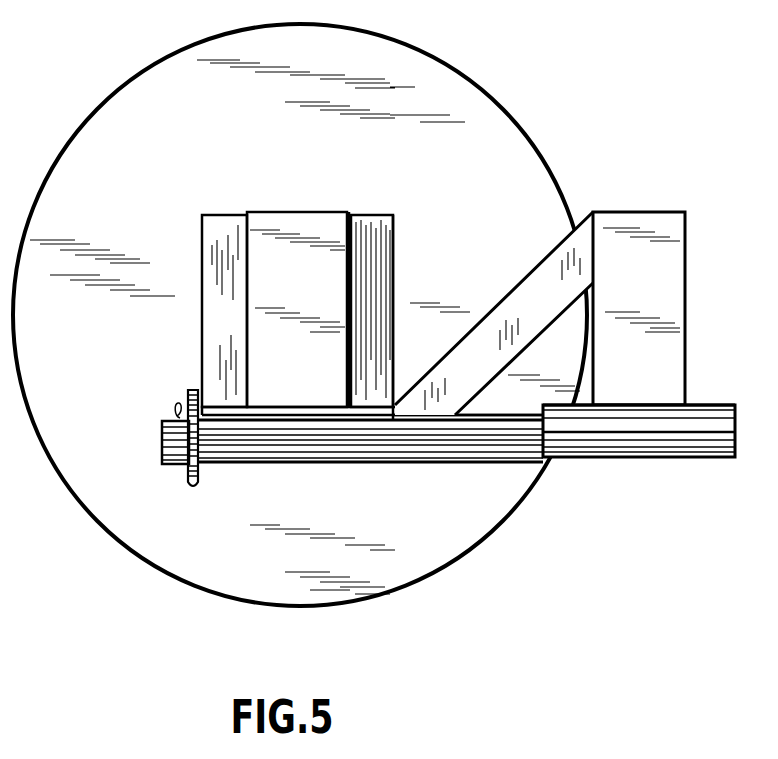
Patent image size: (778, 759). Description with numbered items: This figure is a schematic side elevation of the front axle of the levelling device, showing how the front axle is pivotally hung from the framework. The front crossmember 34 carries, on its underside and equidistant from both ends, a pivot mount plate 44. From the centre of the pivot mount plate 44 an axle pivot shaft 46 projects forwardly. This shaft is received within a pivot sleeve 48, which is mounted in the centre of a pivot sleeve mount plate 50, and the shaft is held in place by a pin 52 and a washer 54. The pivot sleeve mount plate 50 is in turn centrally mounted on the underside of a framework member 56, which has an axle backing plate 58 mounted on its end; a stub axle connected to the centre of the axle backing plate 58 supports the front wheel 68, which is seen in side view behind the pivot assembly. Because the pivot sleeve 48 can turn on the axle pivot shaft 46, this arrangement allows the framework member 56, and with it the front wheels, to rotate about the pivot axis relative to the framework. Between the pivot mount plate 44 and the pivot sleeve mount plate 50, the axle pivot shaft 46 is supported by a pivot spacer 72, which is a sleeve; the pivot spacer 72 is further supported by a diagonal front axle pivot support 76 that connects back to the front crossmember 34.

The front crossmember 34 is at (643, 210).
The pivot mount plate 44 is at (702, 405).
The axle pivot shaft 46 is at (658, 457).
The pivot sleeve 48 is at (327, 465).
The pivot sleeve mount plate 50 is at (308, 405).
The pin 52 is at (178, 474).
The washer 54 is at (193, 488).
The framework member 56 is at (308, 212).
The axle backing plate 58 is at (222, 215).
The front wheel 68 is at (98, 108).
The pivot spacer 72 is at (477, 460).
The front axle pivot support 76 is at (528, 275).